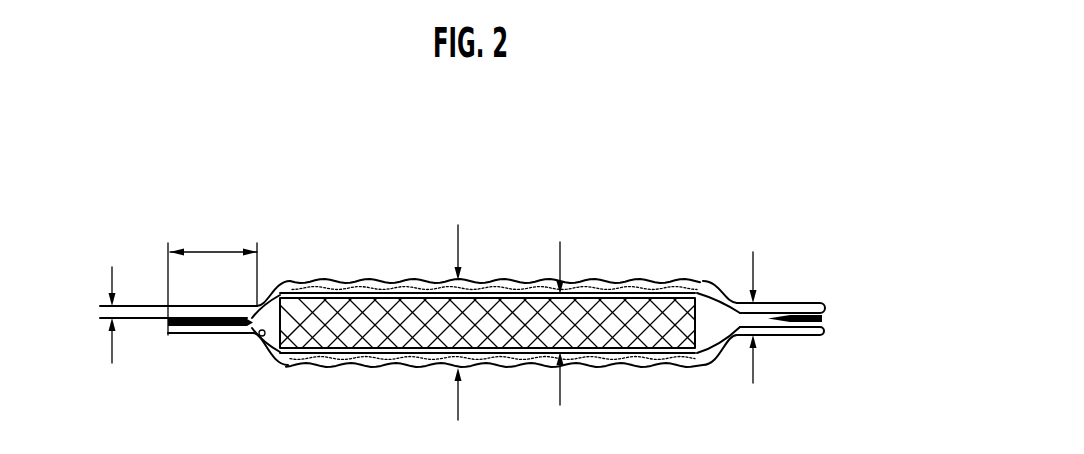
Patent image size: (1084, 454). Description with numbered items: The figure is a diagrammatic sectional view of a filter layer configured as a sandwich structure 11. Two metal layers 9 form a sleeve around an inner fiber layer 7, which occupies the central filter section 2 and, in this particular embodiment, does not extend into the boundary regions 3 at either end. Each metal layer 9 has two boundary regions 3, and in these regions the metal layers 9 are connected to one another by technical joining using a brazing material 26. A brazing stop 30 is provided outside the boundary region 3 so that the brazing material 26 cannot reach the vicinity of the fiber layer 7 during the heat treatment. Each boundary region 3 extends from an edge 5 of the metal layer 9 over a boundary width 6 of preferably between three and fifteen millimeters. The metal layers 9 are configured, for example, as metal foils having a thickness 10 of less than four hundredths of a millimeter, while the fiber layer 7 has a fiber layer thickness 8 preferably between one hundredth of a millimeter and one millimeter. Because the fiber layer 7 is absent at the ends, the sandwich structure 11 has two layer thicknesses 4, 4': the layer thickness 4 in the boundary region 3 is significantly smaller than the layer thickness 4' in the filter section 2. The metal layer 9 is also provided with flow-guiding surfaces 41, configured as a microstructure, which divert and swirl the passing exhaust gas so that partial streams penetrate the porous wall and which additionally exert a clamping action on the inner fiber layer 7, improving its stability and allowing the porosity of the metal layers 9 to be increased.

The filter section 2 is at (393, 281).
The boundary region 3 is at (198, 305).
The layer thickness 4 is at (769, 309).
The layer thickness 4' is at (483, 322).
The edge 5 is at (168, 335).
The boundary width 6 is at (213, 251).
The fiber layer 7 is at (620, 333).
The fiber layer thickness 8 is at (573, 310).
The metal layer 9 is at (327, 367).
The thickness 10 is at (112, 313).
The sandwich structure 11 is at (553, 180).
The brazing material 26 is at (212, 330).
The brazing stop 30 is at (259, 340).
The flow-guiding surfaces 41 is at (497, 380).